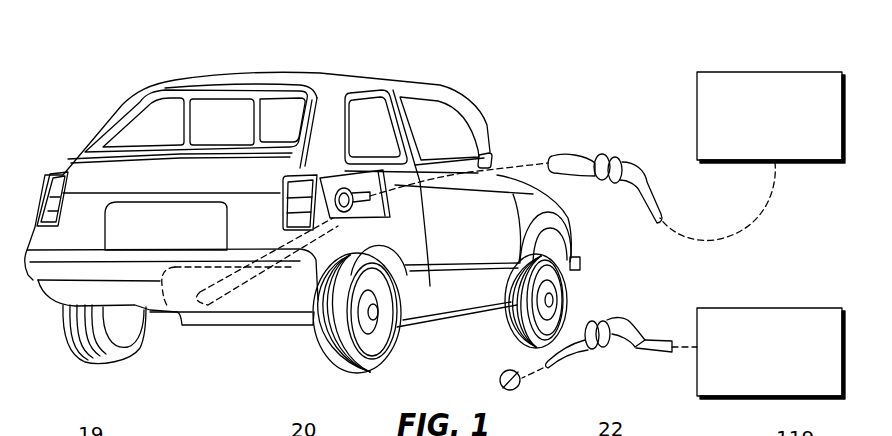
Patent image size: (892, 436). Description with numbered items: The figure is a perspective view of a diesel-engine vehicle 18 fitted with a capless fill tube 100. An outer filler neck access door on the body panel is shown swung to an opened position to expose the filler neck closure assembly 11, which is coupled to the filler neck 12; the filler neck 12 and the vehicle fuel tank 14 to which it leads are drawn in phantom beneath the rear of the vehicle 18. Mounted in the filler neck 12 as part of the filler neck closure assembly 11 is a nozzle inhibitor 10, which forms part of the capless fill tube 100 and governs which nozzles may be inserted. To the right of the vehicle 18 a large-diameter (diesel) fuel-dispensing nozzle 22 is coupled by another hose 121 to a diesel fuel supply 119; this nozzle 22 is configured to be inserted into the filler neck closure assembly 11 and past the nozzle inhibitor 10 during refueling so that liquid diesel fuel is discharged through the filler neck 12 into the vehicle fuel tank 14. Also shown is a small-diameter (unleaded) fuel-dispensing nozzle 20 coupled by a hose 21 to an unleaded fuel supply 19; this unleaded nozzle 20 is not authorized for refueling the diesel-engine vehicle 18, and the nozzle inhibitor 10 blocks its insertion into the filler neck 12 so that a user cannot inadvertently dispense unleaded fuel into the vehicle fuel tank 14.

The nozzle inhibitor 10 is at (336, 223).
The filler neck closure assembly 11 is at (366, 216).
The filler neck 12 is at (324, 194).
The vehicle fuel tank 14 is at (157, 291).
The diesel-engine vehicle 18 is at (404, 73).
The unleaded fuel supply 19 is at (790, 308).
The small-diameter (unleaded) fuel-dispensing nozzle 20 is at (615, 318).
The hose 21 is at (651, 336).
The large-diameter (diesel) fuel-dispensing nozzle 22 is at (536, 150).
The capless fill tube 100 is at (292, 258).
The diesel fuel supply 119 is at (773, 72).
The hose 121 is at (656, 205).